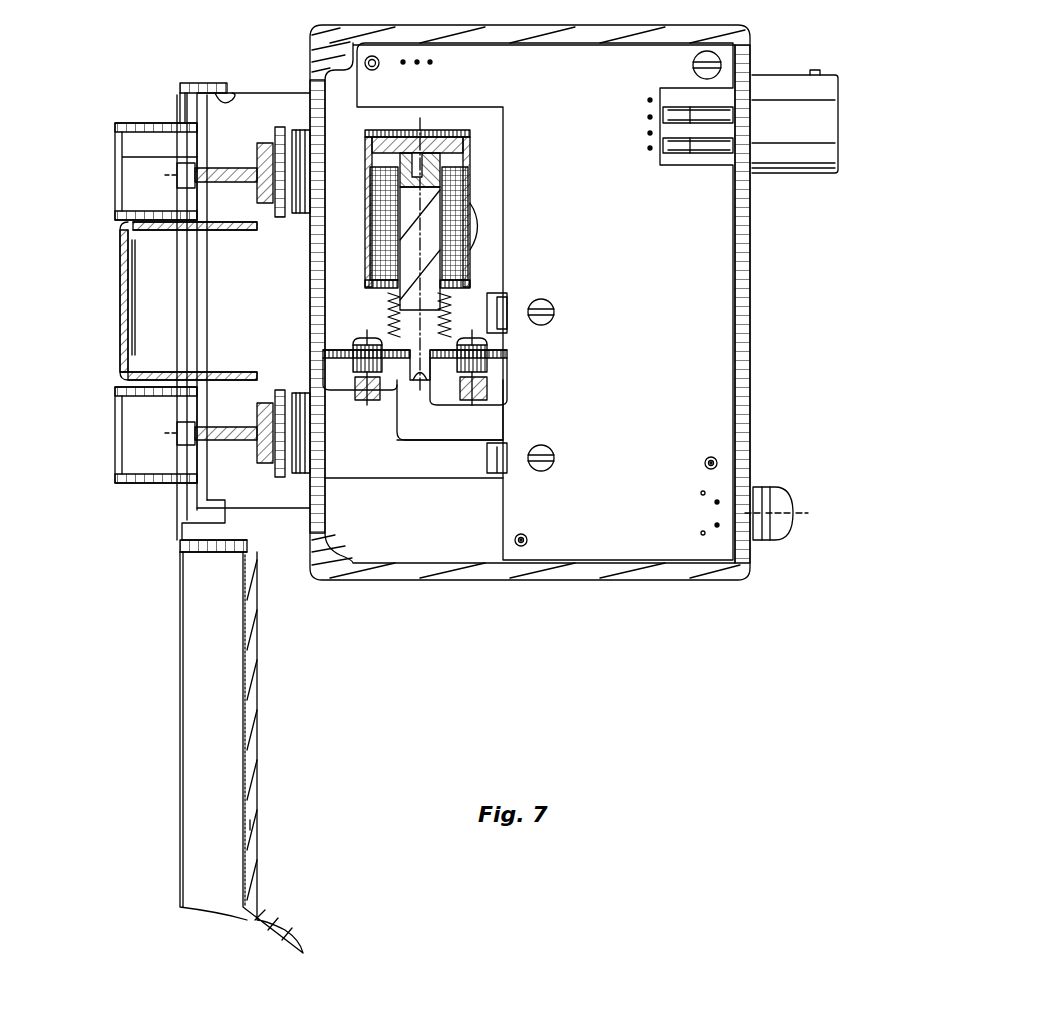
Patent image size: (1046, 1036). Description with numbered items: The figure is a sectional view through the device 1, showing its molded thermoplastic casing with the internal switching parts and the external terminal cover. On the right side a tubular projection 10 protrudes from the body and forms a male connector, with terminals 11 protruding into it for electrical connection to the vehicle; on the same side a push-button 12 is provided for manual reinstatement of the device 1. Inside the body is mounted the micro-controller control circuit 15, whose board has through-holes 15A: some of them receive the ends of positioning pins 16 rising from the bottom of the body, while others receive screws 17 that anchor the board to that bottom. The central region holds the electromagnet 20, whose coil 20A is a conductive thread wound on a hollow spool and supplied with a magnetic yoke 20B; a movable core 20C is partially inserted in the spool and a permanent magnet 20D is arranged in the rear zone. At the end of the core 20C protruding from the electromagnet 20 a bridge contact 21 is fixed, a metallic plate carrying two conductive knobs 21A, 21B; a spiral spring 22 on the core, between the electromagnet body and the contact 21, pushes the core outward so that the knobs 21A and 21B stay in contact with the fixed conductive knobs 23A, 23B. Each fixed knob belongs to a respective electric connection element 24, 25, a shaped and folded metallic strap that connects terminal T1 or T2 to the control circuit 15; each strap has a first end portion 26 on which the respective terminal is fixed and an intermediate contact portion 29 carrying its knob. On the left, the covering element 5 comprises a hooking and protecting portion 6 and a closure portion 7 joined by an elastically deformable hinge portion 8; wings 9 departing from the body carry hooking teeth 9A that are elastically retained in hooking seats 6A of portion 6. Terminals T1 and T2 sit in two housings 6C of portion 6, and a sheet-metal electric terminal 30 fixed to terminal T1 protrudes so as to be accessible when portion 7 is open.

The device 1 is at (665, 698).
The covering element 5 is at (262, 718).
The hooking and protecting portion 6 is at (128, 120).
The hooking seats 6A is at (222, 85).
The housings 6C is at (132, 195).
The closure portion 7 is at (252, 825).
The elastically deformable portion 8 is at (180, 532).
The wings 9 is at (282, 498).
The hooking tooth 9A is at (232, 100).
The tubular projection 10 is at (805, 173).
The terminals 11 is at (703, 150).
The push-button 12 is at (780, 545).
The control circuit 15 is at (712, 343).
The through-holes 15A is at (522, 548).
The positioning pins 16 is at (526, 537).
The screws 17 is at (712, 62).
The electromagnet 20 is at (424, 229).
The coil 20A is at (472, 215).
The magnetic yoke 20B is at (450, 165).
The movable core 20C is at (372, 235).
The permanent magnet 20D is at (440, 137).
The bridge contact 21 is at (497, 349).
The knob 21A is at (362, 340).
The knob 21B is at (487, 345).
The spiral spring 22 is at (483, 318).
The conductive knob 23A is at (372, 395).
The conductive knob 23B is at (450, 410).
The electric connection element 24 is at (350, 498).
The electric connection element 25 is at (340, 143).
The first end portion 26 is at (270, 205).
The intermediate contact portion 29 is at (360, 400).
The electric terminal 30 is at (120, 328).
The connection terminal T1 is at (210, 420).
The connection terminal T2 is at (210, 160).